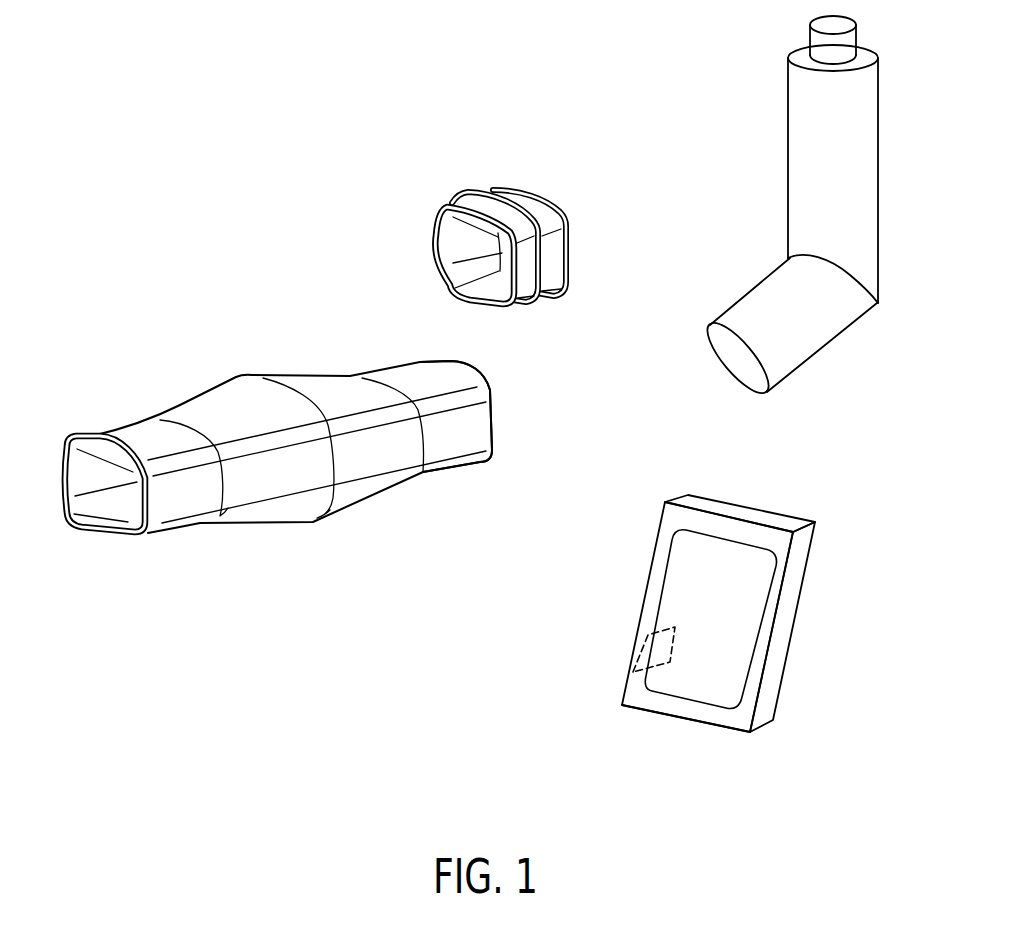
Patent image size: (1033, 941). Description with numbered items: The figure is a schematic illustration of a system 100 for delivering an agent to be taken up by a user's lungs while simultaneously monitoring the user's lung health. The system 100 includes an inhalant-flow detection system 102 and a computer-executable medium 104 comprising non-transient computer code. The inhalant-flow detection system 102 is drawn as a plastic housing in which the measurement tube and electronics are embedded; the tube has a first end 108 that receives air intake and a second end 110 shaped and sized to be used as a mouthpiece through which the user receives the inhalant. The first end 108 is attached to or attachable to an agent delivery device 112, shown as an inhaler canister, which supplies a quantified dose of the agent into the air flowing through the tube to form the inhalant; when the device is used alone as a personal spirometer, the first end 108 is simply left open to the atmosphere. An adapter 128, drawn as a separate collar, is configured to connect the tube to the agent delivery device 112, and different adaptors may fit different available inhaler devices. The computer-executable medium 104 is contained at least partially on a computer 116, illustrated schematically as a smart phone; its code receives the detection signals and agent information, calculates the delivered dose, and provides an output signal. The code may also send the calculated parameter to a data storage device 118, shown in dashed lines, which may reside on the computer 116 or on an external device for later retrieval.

The system 100 is at (226, 196).
The inhalant-flow detection system 102 is at (273, 517).
The computer-executable medium 104 is at (785, 622).
The first end 108 is at (497, 422).
The second end 110 is at (104, 517).
The agent delivery device 112 is at (868, 167).
The computer 116 is at (693, 725).
The data storage device 118 is at (643, 637).
The adapter 128 is at (538, 205).